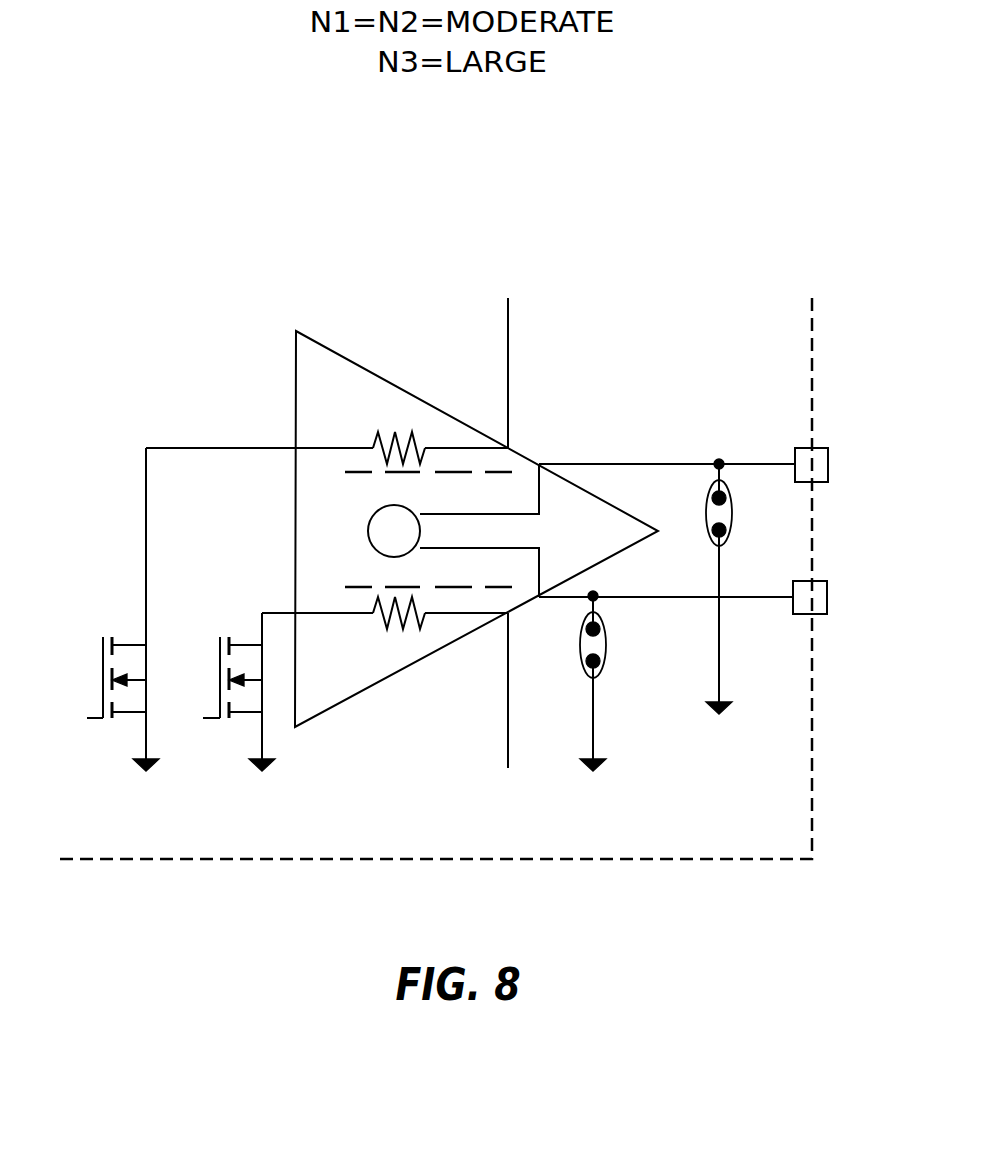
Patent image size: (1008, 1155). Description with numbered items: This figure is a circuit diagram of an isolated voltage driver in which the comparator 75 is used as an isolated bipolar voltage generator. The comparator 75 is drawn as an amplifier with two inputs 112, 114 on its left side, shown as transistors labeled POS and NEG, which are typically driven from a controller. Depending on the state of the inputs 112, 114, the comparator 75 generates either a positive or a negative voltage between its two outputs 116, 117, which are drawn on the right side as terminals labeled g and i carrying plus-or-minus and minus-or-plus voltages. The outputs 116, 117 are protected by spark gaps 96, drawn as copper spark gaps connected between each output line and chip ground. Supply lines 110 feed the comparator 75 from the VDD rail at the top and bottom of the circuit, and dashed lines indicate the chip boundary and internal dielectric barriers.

The comparator 75 is at (342, 320).
The VDD supply line 110 is at (508, 342).
The spark gaps 96 is at (711, 462).
The output 116 is at (777, 463).
The output 117 is at (777, 600).
The input 112 is at (69, 662).
The input 114 is at (185, 662).